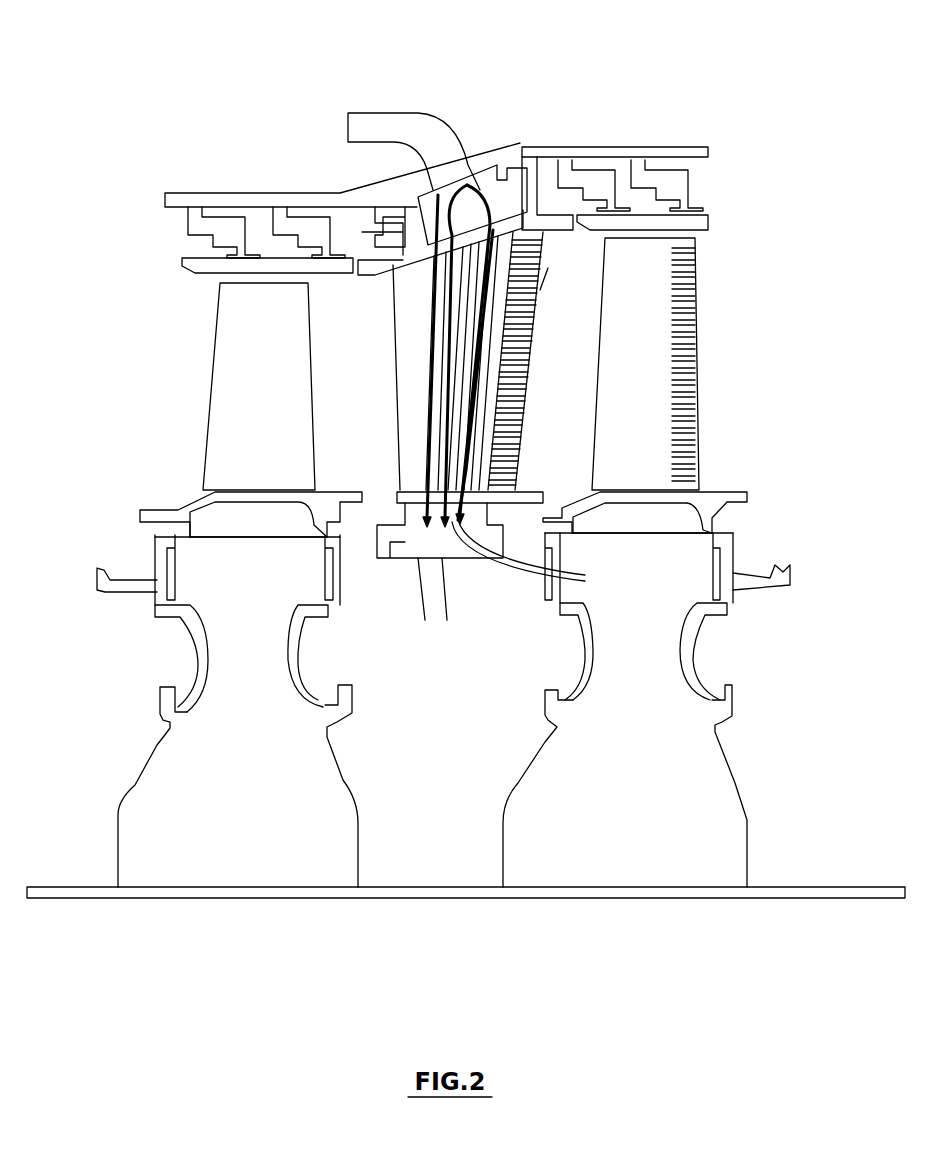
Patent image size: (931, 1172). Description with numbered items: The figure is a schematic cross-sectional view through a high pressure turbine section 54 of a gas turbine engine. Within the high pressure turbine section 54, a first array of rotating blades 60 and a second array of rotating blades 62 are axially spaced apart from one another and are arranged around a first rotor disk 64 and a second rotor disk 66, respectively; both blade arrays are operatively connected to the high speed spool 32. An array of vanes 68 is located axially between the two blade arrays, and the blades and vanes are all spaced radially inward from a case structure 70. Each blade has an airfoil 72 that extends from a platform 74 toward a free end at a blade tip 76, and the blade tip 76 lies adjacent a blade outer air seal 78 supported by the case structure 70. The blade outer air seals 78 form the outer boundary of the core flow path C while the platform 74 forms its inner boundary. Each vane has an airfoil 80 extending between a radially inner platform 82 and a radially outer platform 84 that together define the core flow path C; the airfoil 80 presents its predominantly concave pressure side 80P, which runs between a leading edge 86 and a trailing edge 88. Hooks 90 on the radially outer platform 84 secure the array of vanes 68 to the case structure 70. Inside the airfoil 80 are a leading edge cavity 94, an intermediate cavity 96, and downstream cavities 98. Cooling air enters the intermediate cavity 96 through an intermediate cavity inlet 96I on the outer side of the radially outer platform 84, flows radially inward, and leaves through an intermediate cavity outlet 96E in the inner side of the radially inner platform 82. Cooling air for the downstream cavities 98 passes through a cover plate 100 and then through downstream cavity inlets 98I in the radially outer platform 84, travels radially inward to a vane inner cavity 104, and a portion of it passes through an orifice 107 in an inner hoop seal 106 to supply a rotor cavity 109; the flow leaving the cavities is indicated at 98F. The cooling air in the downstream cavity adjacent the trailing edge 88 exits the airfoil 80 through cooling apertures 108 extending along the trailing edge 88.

The high speed spool 32 is at (826, 899).
The high pressure turbine section 54 is at (787, 82).
The first array of rotating blades 60 is at (143, 391).
The second array of rotating blades 62 is at (760, 309).
The first rotor disk 64 is at (148, 770).
The second rotor disk 66 is at (736, 783).
The array of vanes 68 is at (381, 337).
The case structure 70 is at (575, 147).
The airfoil 72 is at (225, 437).
The platform 74 is at (168, 492).
The blade tip 76 is at (225, 271).
The blade outer air seal 78 is at (188, 257).
The airfoil 80 is at (408, 376).
The pressure side 80P is at (412, 426).
The radially inner platform 82 is at (532, 492).
The radially outer platform 84 is at (560, 232).
The leading edge 86 is at (392, 302).
The trailing edge 88 is at (540, 305).
The hooks 90 is at (387, 218).
The leading edge cavity 94 is at (410, 358).
The intermediate cavity 96 is at (415, 396).
The intermediate cavity outlet 96E is at (396, 505).
The intermediate cavity inlet 96I is at (427, 210).
The downstream cavities 98 is at (466, 352).
The cooling air flow outlet 98F is at (538, 553).
The downstream cavity inlets 98I is at (437, 190).
The cover plate 100 is at (470, 175).
The vane inner cavity 104 is at (454, 550).
The inner hoop seal 106 is at (425, 620).
The orifice 107 is at (447, 620).
The cooling apertures 108 is at (548, 268).
The rotor cavity 109 is at (378, 755).
The core flow path C is at (98, 404).